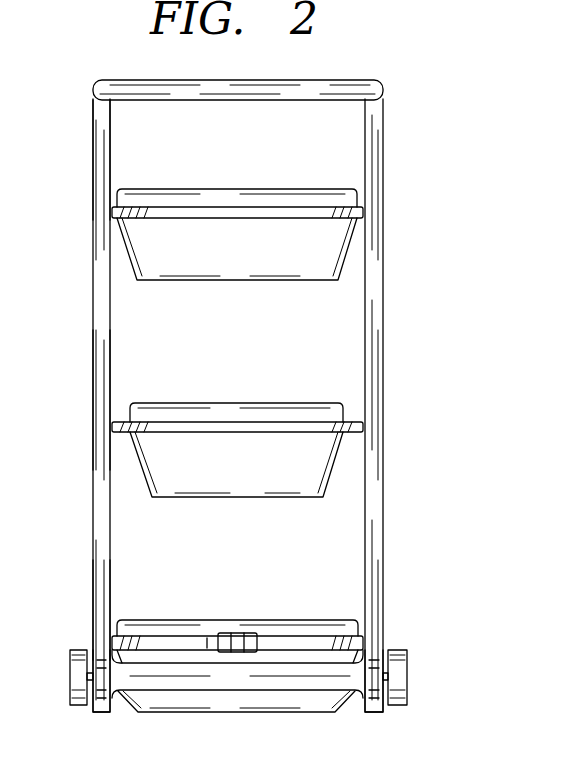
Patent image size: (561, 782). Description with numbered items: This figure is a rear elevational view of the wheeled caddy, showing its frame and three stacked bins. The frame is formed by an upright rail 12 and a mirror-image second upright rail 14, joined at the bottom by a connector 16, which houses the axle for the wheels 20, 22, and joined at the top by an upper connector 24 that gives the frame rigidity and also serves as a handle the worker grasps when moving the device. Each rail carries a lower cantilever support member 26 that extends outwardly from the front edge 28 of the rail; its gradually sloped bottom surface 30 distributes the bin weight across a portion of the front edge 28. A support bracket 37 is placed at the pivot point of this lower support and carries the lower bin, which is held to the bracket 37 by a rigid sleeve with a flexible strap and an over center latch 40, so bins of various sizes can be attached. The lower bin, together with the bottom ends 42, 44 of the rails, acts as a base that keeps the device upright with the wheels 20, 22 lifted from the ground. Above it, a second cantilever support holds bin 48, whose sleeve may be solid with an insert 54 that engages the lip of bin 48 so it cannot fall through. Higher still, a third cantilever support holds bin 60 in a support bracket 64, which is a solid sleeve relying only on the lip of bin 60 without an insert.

The upright rail 12 is at (93, 298).
The second upright rail 14 is at (383, 278).
The connector 16 is at (350, 690).
The wheel 20 is at (407, 683).
The wheel 22 is at (70, 690).
The upper connector 24 is at (354, 80).
The lower cantilever support member 26 is at (93, 622).
The front edge 28 is at (93, 410).
The sloped bottom surface 30 is at (93, 165).
The support bracket 37 is at (350, 633).
The over center latch 40 is at (240, 633).
The bottom end 42 is at (100, 712).
The bottom end 44 is at (372, 712).
The bin 48 is at (213, 463).
The insert 54 is at (350, 400).
The bin 60 is at (213, 248).
The support bracket 64 is at (350, 218).